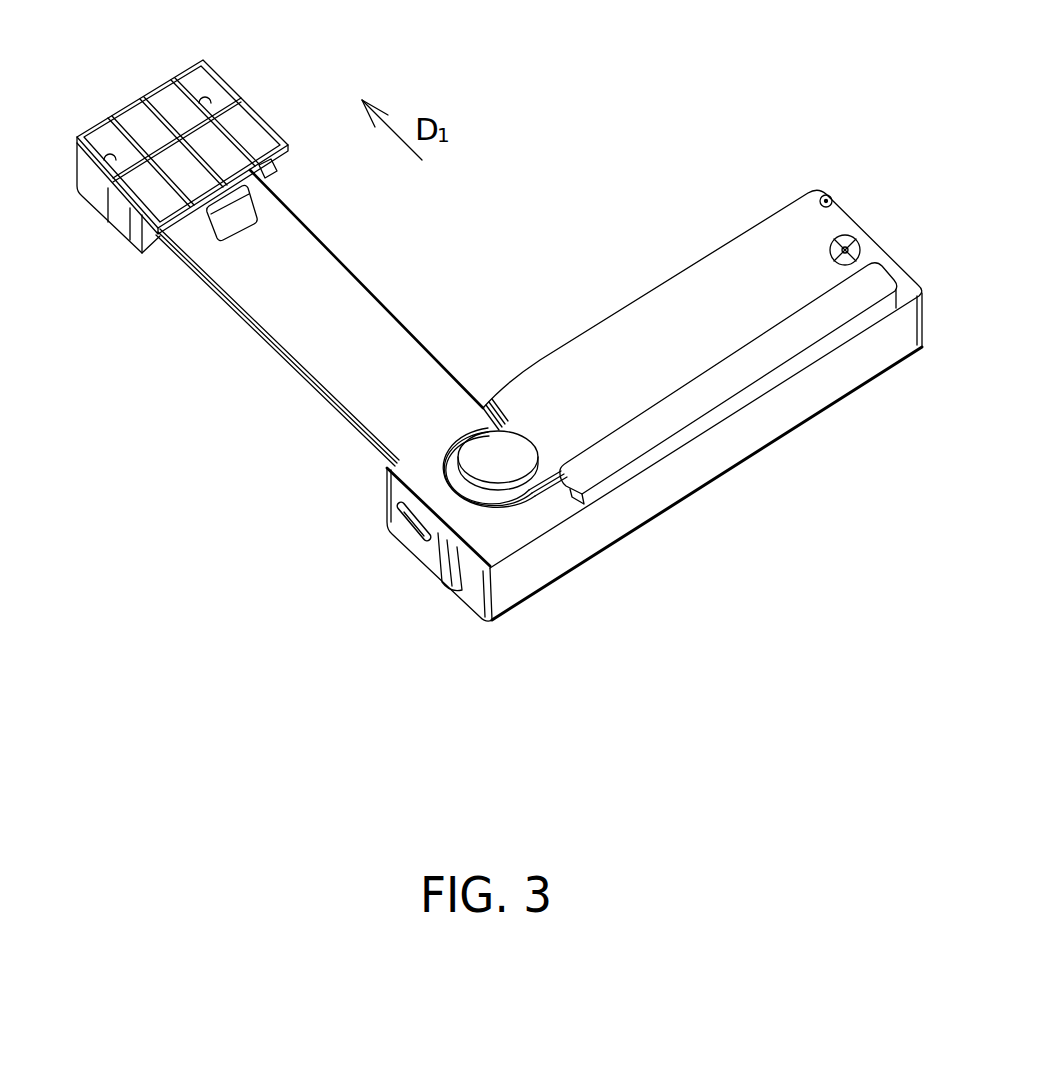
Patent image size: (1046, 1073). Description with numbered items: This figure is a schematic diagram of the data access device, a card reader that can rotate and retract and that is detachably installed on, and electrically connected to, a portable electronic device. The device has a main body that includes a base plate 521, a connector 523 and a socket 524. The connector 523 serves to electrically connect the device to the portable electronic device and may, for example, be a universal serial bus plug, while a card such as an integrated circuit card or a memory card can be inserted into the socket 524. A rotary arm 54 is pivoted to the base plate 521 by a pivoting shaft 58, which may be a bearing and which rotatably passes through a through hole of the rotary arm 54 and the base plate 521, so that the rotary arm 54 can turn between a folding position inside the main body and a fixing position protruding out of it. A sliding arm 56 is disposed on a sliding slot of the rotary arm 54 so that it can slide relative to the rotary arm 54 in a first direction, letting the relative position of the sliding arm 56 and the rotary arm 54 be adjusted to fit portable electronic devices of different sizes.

The rotary arm 54 is at (355, 310).
The sliding arm 56 is at (93, 190).
The pivoting shaft 58 is at (505, 457).
The base plate 521 is at (647, 425).
The connector 523 is at (420, 528).
The socket 524 is at (458, 588).